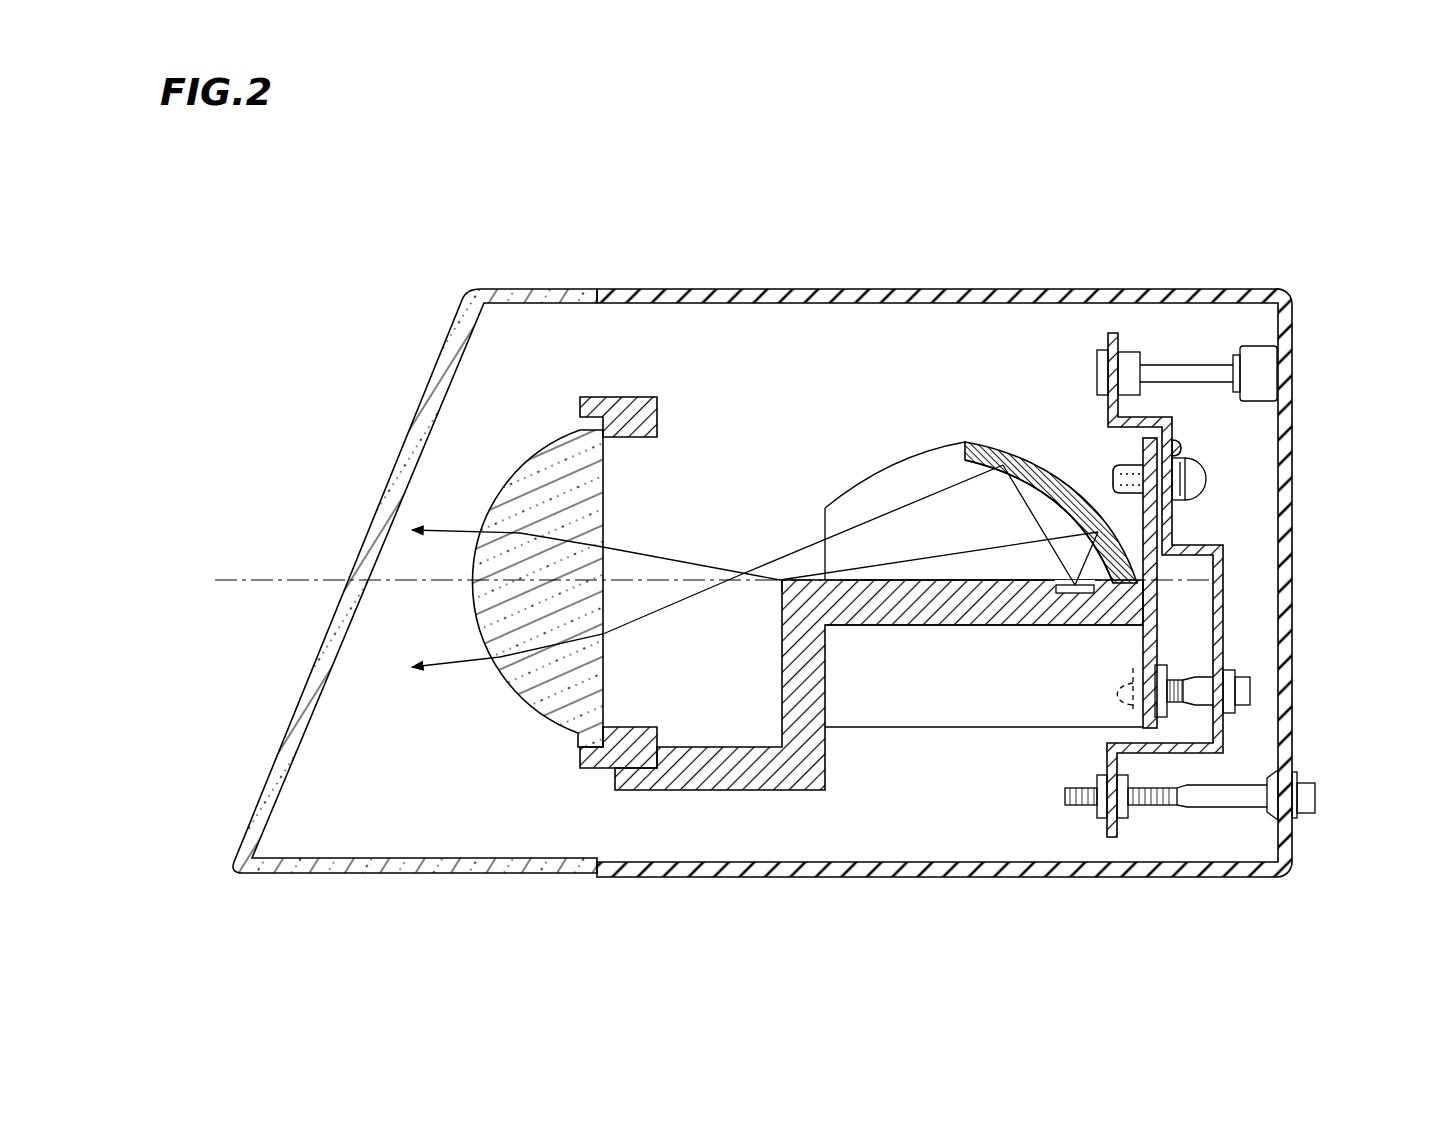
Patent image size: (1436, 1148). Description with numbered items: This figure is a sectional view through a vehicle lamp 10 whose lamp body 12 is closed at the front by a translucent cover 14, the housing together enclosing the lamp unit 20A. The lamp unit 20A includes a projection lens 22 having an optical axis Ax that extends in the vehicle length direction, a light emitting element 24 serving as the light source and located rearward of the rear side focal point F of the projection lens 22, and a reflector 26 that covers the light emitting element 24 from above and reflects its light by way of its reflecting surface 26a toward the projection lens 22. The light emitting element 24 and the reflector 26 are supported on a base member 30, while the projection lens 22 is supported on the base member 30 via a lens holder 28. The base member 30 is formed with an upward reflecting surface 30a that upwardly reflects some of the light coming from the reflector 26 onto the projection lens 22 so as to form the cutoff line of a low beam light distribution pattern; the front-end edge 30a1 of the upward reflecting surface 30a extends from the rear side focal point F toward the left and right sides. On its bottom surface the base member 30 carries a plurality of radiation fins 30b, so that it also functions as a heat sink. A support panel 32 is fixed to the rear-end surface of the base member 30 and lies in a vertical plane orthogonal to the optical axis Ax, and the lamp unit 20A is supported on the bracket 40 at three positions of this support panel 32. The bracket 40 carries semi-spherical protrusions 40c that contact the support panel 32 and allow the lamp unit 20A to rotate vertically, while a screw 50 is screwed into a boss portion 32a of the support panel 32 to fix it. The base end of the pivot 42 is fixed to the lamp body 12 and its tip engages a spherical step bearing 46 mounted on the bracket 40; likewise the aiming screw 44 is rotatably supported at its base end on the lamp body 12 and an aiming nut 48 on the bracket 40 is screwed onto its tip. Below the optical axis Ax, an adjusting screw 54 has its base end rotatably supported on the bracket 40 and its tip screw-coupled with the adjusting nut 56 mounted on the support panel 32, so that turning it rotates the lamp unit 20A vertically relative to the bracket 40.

The vehicle lamp 10 is at (489, 209).
The lamp body 12 is at (1275, 287).
The translucent cover 14 is at (459, 313).
The lamp unit 20A is at (487, 392).
The projection lens 22 is at (502, 505).
The light emitting element 24 is at (1062, 578).
The reflector 26 is at (989, 436).
The reflecting surface 26a is at (1043, 492).
The lens holder 28 is at (579, 755).
The base member 30 is at (964, 630).
The upward reflecting surface 30a is at (864, 578).
The front-end edge 30a1 is at (780, 578).
The rear side focal point F is at (850, 556).
The radiation fins 30b is at (933, 706).
The support panel 32 is at (1160, 613).
The boss portions 32a is at (1112, 478).
The bracket 40 is at (1231, 562).
The protrusions 40c is at (1143, 460).
The pivot 42 is at (1166, 368).
The aiming screw 44 is at (1220, 810).
The spherical step bearing 46 is at (1100, 356).
The aiming nut 48 is at (1096, 798).
The screw 50 is at (1203, 464).
The adjusting screw 54 is at (1253, 683).
The adjusting nut 56 is at (1133, 710).
The optical axis Ax is at (291, 577).